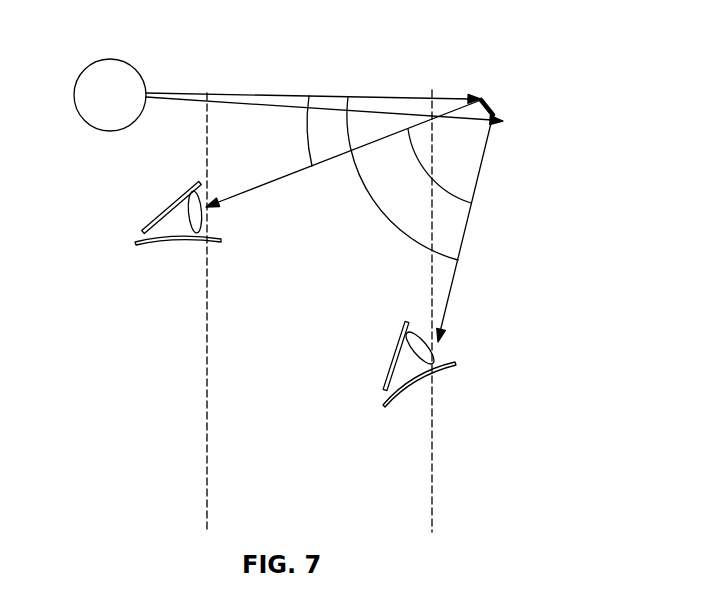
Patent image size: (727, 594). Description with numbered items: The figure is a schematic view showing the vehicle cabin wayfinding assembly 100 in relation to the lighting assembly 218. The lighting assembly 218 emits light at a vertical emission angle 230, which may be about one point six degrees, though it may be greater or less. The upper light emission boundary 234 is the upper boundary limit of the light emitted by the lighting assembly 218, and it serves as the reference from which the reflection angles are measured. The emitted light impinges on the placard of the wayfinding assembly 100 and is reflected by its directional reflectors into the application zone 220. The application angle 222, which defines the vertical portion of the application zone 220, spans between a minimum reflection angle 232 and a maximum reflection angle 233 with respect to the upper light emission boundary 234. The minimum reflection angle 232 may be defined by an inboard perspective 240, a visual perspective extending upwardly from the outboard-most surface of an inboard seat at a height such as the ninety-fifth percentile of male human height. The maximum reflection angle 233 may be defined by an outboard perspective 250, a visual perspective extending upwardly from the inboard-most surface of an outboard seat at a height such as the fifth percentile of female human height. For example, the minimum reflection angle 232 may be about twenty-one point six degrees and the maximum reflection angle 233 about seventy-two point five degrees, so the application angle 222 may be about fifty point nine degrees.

The lighting assembly 218 is at (115, 77).
The upper light emission boundary 234 is at (330, 97).
The vertical emission angle 230 is at (385, 110).
The vehicle cabin wayfinding assembly 100 is at (492, 108).
The application zone 220 is at (308, 268).
The minimum reflection angle 232 is at (308, 137).
The maximum reflection angle 233 is at (383, 218).
The application angle 222 is at (442, 182).
The inboard perspective 240 is at (175, 243).
The outboard perspective 250 is at (435, 365).